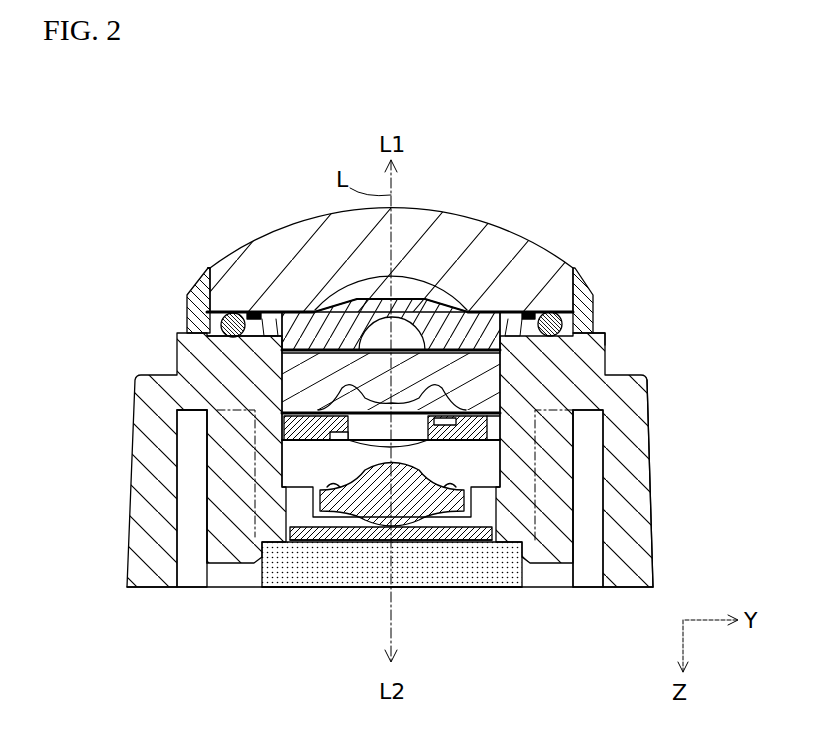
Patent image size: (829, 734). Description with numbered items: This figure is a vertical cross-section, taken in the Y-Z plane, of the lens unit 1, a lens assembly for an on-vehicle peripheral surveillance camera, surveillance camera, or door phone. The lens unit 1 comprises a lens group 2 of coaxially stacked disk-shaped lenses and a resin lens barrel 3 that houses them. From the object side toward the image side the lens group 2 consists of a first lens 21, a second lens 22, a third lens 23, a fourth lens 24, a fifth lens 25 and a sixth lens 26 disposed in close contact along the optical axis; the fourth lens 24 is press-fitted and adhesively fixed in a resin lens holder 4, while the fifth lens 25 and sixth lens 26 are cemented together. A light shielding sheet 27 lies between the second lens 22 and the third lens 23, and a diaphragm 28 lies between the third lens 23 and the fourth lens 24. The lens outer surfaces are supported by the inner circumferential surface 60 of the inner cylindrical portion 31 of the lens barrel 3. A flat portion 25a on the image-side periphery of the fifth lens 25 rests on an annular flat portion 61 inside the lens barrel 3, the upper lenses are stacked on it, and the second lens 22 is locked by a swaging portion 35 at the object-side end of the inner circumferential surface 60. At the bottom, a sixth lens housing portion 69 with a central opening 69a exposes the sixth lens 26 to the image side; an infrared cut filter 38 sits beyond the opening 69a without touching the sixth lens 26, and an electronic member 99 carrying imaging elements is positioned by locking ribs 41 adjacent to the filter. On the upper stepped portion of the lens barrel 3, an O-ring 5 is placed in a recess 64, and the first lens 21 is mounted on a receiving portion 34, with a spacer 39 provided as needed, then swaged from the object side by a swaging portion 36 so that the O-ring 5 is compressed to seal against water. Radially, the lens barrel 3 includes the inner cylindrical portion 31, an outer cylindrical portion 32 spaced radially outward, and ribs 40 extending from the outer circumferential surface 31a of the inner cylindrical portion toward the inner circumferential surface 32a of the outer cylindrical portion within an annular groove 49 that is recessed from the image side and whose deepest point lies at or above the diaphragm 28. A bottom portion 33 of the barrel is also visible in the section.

The lens unit 1 is at (90, 108).
The lens group 2 is at (622, 119).
The lens barrel 3 is at (648, 380).
The lens holder 4 is at (495, 427).
The O-ring 5 is at (600, 333).
The first lens 21 is at (420, 320).
The second lens 22 is at (425, 370).
The third lens 23 is at (440, 400).
The fourth lens 24 is at (455, 428).
The fifth lens 25 is at (445, 470).
The flat portion 25a is at (330, 500).
The sixth lens 26 is at (430, 505).
The light shielding sheet 27 is at (215, 367).
The diaphragm 28 is at (218, 432).
The inner cylindrical portion 31 is at (573, 473).
The outer circumferential surface 31a is at (222, 468).
The outer cylindrical portion 32 is at (649, 520).
The inner circumferential surface 32a is at (190, 420).
The bottom of housing 33 is at (650, 580).
The receiving portion 34 is at (177, 350).
The swaging portion 35 is at (233, 311).
The swaging portion 36 is at (203, 268).
The infrared cut filter 38 is at (465, 575).
The spacer 39 is at (221, 323).
The ribs 40 is at (395, 570).
The locking rib 41 is at (220, 567).
The annular groove 49 is at (191, 545).
The inner circumferential surface 60 is at (290, 318).
The annular flat portion 61 is at (300, 493).
The recess 64 is at (606, 348).
The sixth lens housing portion 69 is at (292, 545).
The opening 69a is at (358, 542).
The electronic member 99 is at (428, 590).